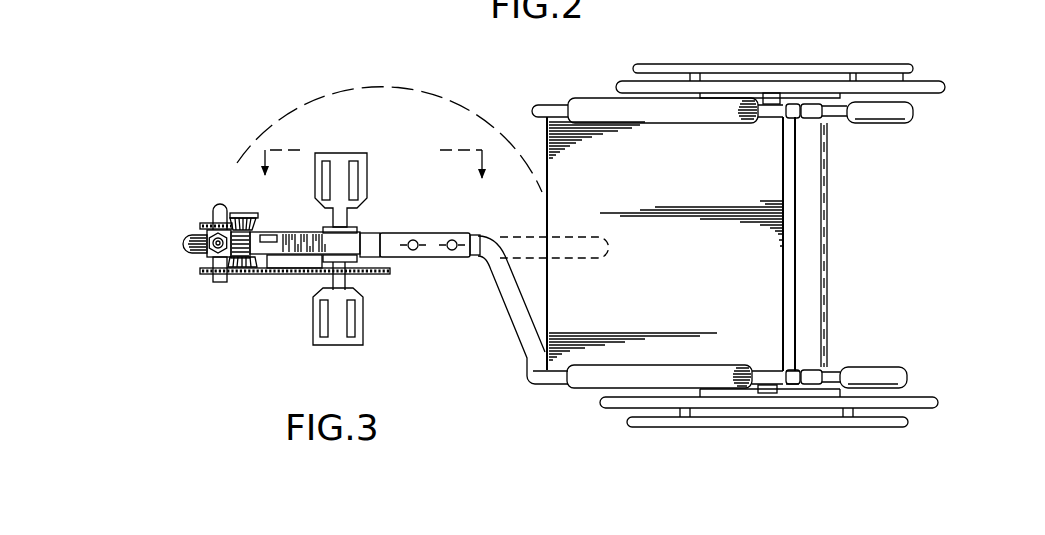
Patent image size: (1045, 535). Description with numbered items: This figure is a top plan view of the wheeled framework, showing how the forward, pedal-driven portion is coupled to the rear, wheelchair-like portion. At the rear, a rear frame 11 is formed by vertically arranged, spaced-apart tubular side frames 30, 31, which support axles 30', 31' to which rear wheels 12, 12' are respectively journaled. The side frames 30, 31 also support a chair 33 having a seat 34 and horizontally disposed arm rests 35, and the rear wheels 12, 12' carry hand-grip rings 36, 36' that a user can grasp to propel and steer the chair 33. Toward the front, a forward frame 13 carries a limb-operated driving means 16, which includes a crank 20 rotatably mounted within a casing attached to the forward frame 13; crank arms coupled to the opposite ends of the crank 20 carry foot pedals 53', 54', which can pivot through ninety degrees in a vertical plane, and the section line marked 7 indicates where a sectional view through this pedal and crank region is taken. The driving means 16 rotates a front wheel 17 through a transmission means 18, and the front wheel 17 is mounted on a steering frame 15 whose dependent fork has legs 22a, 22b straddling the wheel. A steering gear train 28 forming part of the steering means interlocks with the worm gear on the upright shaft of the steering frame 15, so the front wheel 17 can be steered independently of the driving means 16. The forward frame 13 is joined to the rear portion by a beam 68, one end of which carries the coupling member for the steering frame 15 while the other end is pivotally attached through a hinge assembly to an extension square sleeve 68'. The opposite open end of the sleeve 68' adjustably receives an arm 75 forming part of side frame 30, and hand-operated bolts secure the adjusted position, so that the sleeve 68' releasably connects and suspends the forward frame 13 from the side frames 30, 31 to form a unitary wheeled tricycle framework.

The section line 7- 7 is at (375, 176).
The rear frame 11 is at (513, 333).
The rear wheel 12 is at (740, 428).
The rear wheel 12' is at (780, 49).
The forward frame 13 is at (267, 258).
The steering frame 15 is at (205, 221).
The limb-operated driving means 16 is at (307, 323).
The front wheel 17 is at (188, 245).
The transmission means 18 is at (195, 217).
The crank 20 is at (354, 283).
The fork leg 22a is at (217, 283).
The fork leg 22b is at (221, 210).
The steering gear train 28 is at (192, 252).
The tubular side frame 30 is at (692, 415).
The axle 30' is at (770, 427).
The tubular side frame 31 is at (697, 84).
The axle 31' is at (770, 52).
The chair 33 is at (829, 218).
The seat 34 is at (699, 259).
The arm rest 35 is at (590, 108).
The hand-grip ring 36 is at (769, 443).
The hand-grip ring 36' is at (773, 40).
The foot pedal 53' is at (380, 343).
The foot pedal 54' is at (358, 161).
The beam 68 is at (295, 212).
The extension square sleeve 68' is at (420, 206).
The arm 75 is at (508, 292).